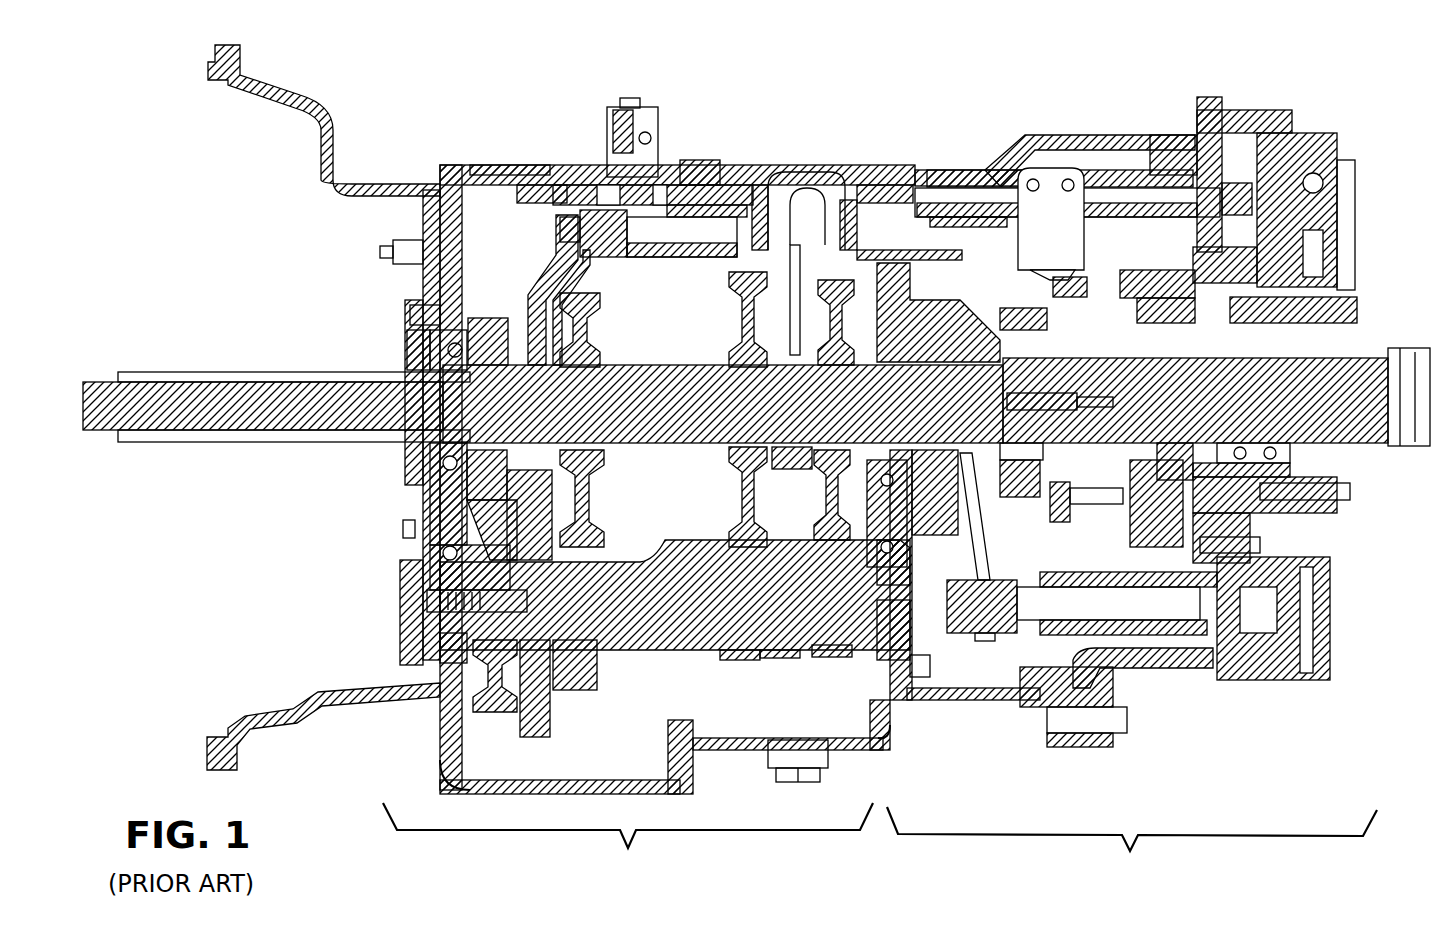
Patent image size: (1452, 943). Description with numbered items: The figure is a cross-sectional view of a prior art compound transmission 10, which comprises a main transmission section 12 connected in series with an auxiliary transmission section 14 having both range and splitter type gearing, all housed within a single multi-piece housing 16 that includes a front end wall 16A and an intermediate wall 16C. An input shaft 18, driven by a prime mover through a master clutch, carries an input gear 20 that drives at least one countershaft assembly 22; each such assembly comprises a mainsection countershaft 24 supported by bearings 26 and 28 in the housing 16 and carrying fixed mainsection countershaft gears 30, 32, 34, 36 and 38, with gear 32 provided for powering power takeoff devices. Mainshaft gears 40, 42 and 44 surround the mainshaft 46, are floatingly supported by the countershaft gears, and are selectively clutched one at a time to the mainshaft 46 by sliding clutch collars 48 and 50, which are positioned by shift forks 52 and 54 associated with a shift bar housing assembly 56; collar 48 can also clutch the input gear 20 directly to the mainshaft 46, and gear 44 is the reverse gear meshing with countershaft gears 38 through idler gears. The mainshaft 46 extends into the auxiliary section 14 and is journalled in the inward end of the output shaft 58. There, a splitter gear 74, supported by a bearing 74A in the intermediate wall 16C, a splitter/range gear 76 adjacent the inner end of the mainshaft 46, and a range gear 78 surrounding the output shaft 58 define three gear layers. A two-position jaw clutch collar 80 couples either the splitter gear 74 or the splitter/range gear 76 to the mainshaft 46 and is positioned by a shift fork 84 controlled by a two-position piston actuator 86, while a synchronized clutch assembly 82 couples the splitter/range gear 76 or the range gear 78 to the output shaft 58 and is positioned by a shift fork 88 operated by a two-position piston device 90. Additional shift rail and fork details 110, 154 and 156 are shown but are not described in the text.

The compound transmission 10 is at (870, 140).
The main transmission section 12 is at (628, 843).
The auxiliary transmission section 14 is at (1132, 845).
The housing 16 is at (440, 735).
The front end wall 16A is at (440, 763).
The intermediate wall 16C is at (880, 748).
The input shaft 18 is at (195, 395).
The input gear 20 is at (488, 320).
The countershaft assembly 22 is at (675, 662).
The mainsection countershaft 24 is at (785, 628).
The bearing 26 is at (430, 560).
The bearing 28 is at (930, 665).
The mainsection countershaft gear 30 is at (482, 715).
The mainsection countershaft gear 32 is at (533, 738).
The mainsection countershaft gear 34 is at (577, 692).
The mainsection countershaft gear 36 is at (745, 660).
The mainsection countershaft gear 38 is at (830, 658).
The mainshaft gear 40 is at (590, 492).
The mainshaft gear 42 is at (730, 520).
The mainshaft gear 44 is at (820, 503).
The mainshaft 46 is at (712, 418).
The sliding clutch collar 48 is at (565, 445).
The sliding clutch collar 50 is at (800, 455).
The shift fork 52 is at (583, 275).
The shift fork 54 is at (812, 280).
The shift bar housing assembly 56 is at (505, 165).
The output shaft 58 is at (1355, 375).
The splitter gear 74 is at (935, 490).
The bearing 74A is at (970, 330).
The splitter/range gear 76 is at (1020, 498).
The range gear 78 is at (1150, 540).
The sliding two-position jaw clutch collar 80 is at (965, 335).
The synchronized clutch assembly 82 is at (1105, 505).
The shift fork 84 is at (975, 568).
The two-position piston actuator 86 is at (1285, 680).
The shift fork 88 is at (1080, 245).
The two-position piston device 90 is at (1150, 162).
The shift rail 110 is at (738, 168).
The shift fork 154 is at (668, 258).
The shift block 156 is at (672, 168).